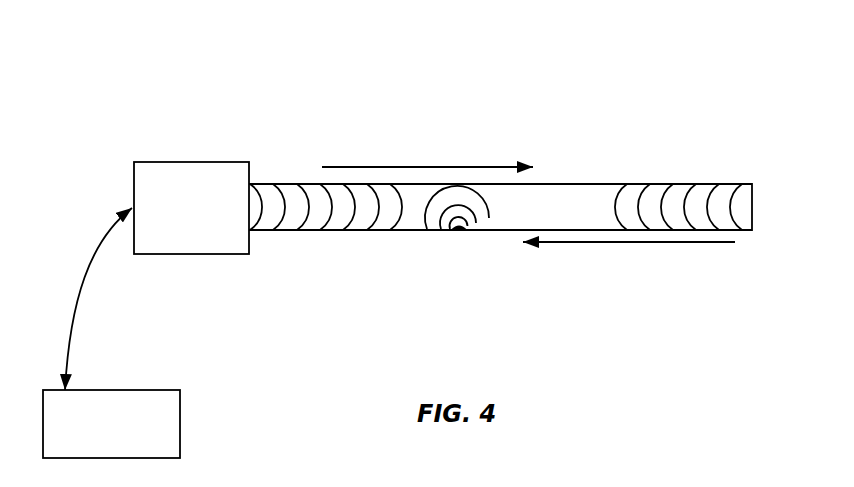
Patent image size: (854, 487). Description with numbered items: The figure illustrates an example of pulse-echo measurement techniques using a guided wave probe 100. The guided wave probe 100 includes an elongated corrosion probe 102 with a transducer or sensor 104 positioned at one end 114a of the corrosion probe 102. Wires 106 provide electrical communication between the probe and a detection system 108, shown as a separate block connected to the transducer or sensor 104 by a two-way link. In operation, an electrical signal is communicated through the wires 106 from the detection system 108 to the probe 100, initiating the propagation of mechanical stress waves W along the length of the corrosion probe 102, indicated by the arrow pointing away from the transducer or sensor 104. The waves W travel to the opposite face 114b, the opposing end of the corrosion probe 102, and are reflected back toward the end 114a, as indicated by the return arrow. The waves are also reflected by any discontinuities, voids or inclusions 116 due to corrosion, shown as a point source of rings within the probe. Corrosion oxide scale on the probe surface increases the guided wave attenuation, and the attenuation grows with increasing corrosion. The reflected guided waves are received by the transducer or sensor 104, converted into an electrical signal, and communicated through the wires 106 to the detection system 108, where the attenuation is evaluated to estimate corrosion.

The guided wave probe 100 is at (375, 70).
The corrosion probe 102 is at (568, 184).
The transducer or sensor 104 is at (190, 162).
The wires 106 is at (77, 297).
The detection system 108 is at (111, 424).
The end of the corrosion probe 114a is at (272, 265).
The opposite face of the corrosion probe 114b is at (728, 265).
The discontinuities, voids or inclusions 116 is at (466, 232).
The mechanical stress waves W is at (283, 206).